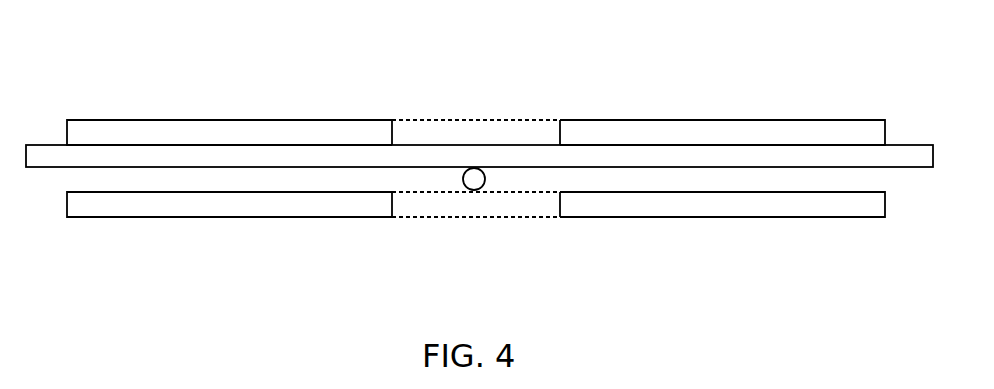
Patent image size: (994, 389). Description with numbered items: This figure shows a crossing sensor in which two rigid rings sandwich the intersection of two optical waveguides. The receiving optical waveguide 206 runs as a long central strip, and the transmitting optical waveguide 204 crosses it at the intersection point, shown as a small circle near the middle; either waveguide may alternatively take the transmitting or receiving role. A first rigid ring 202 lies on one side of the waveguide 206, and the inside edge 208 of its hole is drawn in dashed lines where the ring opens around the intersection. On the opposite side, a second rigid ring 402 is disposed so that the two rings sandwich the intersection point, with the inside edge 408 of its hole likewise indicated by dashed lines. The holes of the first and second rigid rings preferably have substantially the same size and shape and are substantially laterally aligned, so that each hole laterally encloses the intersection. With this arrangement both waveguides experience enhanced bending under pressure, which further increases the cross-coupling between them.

The first rigid ring 202 is at (303, 125).
The transmitting optical waveguide 204 is at (474, 185).
The receiving optical waveguide 206 is at (43, 158).
The inside edge of the hole of the first rigid ring 208 is at (476, 121).
The second rigid ring 402 is at (222, 203).
The inside edge of the hole of the second rigid ring 408 is at (420, 217).